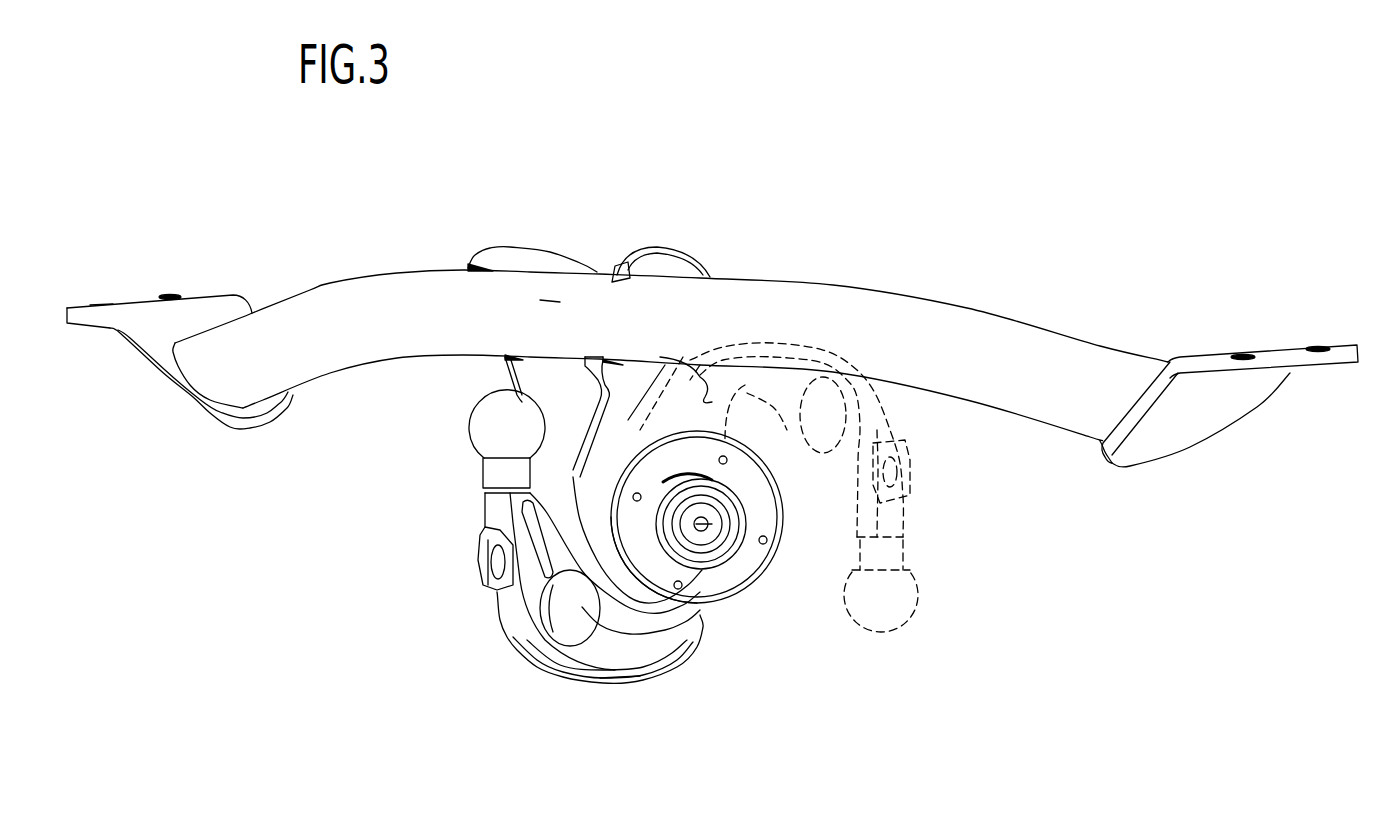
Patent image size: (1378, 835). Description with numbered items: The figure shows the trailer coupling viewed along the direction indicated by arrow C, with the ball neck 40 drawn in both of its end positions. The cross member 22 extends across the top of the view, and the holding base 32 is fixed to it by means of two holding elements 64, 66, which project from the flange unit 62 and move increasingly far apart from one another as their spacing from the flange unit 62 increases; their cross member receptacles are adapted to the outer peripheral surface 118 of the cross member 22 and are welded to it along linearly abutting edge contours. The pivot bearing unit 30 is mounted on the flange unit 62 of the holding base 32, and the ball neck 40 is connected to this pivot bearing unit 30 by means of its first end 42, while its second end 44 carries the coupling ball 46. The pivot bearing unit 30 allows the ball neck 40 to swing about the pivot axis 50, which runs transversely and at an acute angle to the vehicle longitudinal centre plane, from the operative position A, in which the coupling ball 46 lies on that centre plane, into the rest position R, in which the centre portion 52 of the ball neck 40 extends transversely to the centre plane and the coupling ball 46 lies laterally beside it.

The cross member 22 is at (905, 320).
The pivot bearing unit 30 is at (711, 449).
The holding base 32 is at (700, 256).
The ball neck 40 is at (885, 413).
The first end 42 is at (703, 620).
The second end 44 is at (496, 474).
The coupling ball 46 is at (905, 593).
The pivot axis 50 is at (705, 527).
The centre portion 52 is at (800, 345).
The flange unit 62 is at (786, 536).
The holding element 64 is at (503, 258).
The holding element 66 is at (653, 258).
The outer peripheral surface 118 is at (553, 307).
The rest position R is at (913, 467).
The operative position A is at (665, 663).
The travel direction C is at (1157, 527).